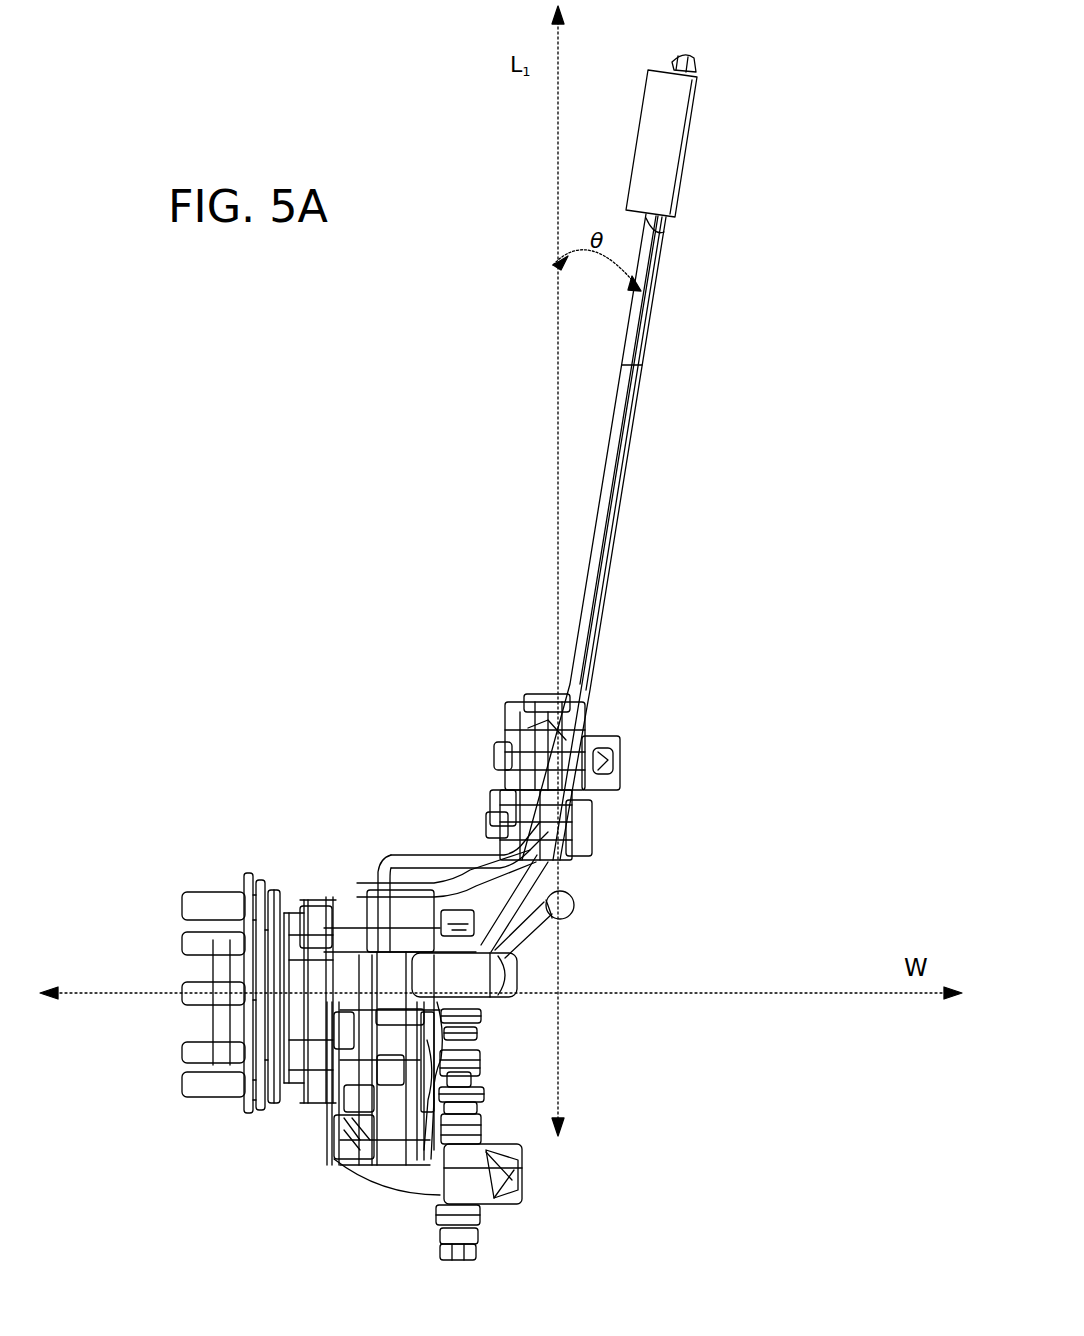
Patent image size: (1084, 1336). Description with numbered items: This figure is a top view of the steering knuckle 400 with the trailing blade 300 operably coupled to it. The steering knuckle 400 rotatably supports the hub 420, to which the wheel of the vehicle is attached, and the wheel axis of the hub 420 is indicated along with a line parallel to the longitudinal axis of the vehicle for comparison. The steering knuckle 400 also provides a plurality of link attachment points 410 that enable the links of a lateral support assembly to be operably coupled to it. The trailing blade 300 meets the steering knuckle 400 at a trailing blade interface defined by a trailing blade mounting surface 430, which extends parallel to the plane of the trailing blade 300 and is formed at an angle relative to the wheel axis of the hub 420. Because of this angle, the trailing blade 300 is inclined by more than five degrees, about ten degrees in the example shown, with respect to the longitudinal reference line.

The trailing blade 300 is at (623, 490).
The steering knuckle 400 is at (353, 1192).
The link attachment points 410 is at (495, 975).
The hub 420 is at (258, 1108).
The trailing blade mounting surface 430 is at (528, 728).